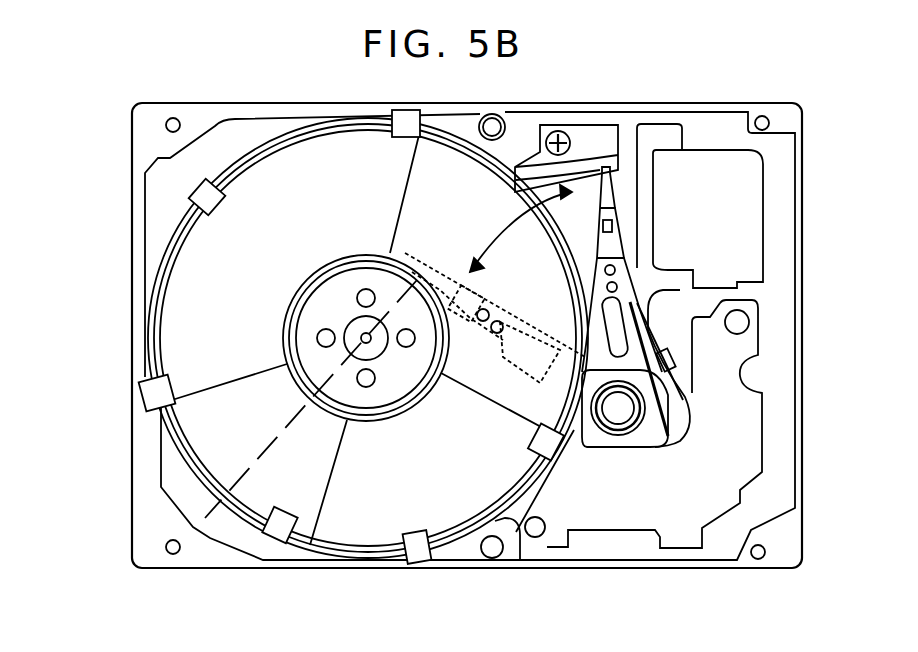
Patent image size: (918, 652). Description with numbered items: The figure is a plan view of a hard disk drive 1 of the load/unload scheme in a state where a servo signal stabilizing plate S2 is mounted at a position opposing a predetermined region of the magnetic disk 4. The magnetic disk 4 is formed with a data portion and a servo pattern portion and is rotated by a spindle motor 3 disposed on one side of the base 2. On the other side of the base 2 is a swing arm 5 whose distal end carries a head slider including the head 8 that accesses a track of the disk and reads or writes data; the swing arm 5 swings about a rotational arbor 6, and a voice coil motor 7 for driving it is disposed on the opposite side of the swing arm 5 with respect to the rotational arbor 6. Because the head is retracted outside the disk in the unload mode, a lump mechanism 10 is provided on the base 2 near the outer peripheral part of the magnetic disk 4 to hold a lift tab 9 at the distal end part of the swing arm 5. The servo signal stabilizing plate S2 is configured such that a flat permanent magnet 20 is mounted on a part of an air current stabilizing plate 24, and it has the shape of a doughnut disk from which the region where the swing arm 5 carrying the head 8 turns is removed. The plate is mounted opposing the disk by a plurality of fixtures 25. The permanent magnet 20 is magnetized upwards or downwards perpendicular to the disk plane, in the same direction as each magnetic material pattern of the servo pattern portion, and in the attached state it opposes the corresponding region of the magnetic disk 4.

The hard disk drive 1 is at (120, 254).
The base 2 is at (165, 190).
The servo signal stabilizing plate S2 is at (202, 307).
The spindle motor 3 is at (362, 326).
The magnetic disk 4 is at (185, 348).
The swing arm 5 is at (592, 281).
The rotational arbor 6 is at (622, 412).
The voice coil motor 7 is at (682, 492).
The head 8 is at (437, 273).
The lift tab 9 is at (410, 253).
The lump mechanism 10 is at (589, 139).
The permanent magnet 20 is at (268, 497).
The air current stabilizing plate 24 is at (313, 160).
The fixtures 25 is at (283, 528).